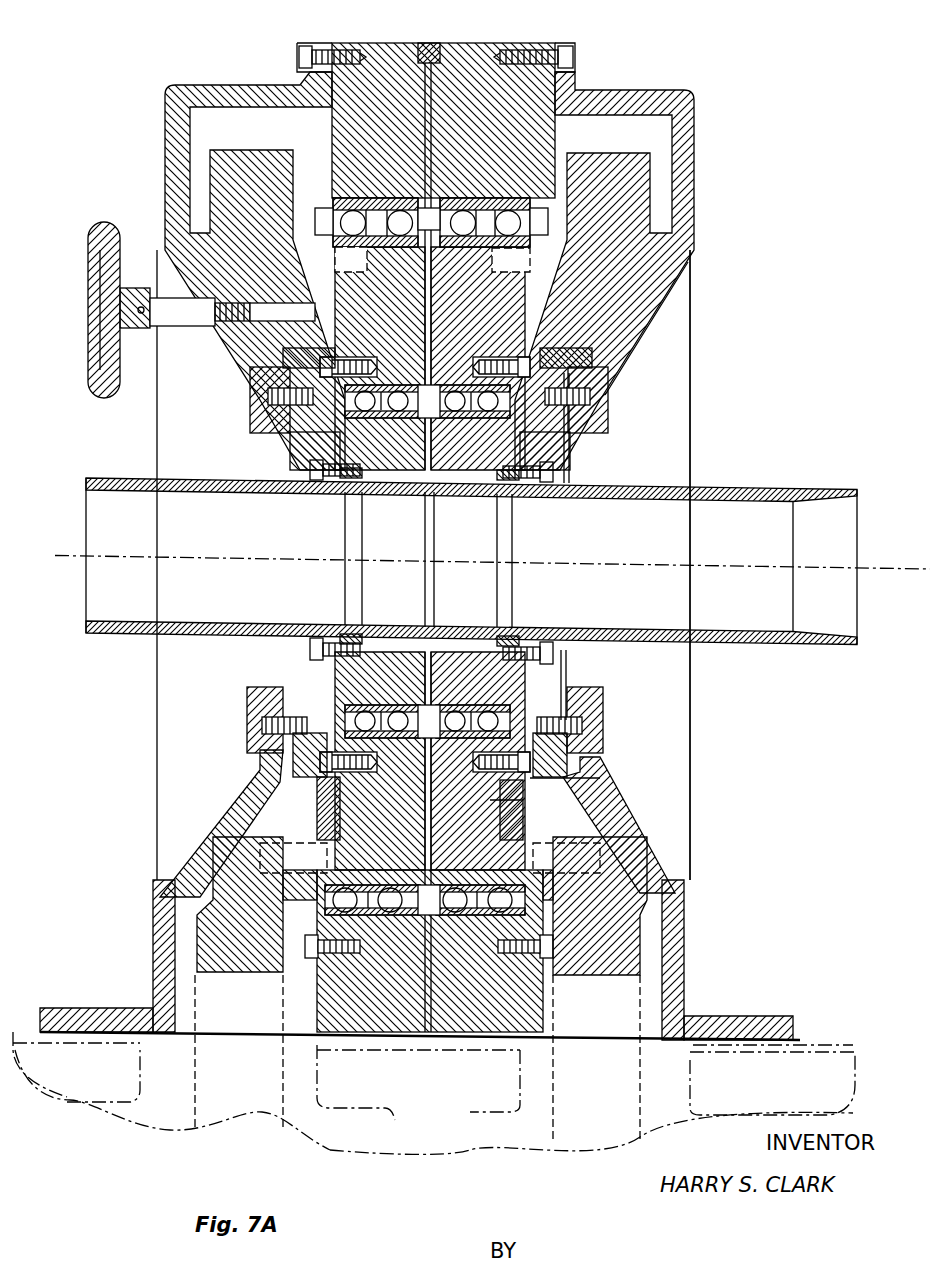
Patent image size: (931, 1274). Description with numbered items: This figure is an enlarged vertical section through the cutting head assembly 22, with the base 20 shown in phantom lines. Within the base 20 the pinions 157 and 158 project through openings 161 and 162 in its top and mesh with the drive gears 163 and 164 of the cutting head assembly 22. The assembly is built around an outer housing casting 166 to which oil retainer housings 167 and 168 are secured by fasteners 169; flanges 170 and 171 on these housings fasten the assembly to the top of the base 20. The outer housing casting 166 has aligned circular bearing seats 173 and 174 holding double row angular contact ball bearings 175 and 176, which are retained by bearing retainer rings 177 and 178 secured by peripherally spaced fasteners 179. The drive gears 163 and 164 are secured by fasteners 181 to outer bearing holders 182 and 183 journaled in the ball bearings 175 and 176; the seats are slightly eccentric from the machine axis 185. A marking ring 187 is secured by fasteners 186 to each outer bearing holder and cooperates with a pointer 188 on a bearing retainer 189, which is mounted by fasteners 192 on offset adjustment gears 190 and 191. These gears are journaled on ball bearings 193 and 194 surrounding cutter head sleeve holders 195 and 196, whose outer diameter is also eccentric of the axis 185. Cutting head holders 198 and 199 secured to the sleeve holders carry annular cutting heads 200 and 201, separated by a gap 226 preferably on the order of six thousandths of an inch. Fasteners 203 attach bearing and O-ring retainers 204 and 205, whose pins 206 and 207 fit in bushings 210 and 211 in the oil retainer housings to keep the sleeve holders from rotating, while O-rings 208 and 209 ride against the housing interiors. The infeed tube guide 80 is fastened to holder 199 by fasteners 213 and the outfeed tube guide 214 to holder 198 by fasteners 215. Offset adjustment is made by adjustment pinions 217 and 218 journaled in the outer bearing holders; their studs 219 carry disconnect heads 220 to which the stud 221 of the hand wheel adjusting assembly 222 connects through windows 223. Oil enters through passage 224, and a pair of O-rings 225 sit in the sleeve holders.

The base 20 is at (828, 1034).
The cutting head assembly 22 is at (712, 811).
The infeed tube guide 80 is at (745, 645).
The pinion 157 is at (270, 1120).
The pinion 158 is at (580, 1125).
The opening 161 is at (150, 1055).
The opening 162 is at (690, 1064).
The drive gear 163 is at (232, 960).
The drive gear 164 is at (590, 962).
The outer housing casting 166 is at (378, 1040).
The oil retainer housing 167 is at (158, 903).
The oil retainer housing 168 is at (686, 913).
The fasteners 169 is at (575, 55).
The flange 170 is at (97, 1008).
The flange 171 is at (725, 1016).
The bearing seat 173 is at (366, 205).
The bearing seat 174 is at (490, 205).
The double row angular contact ball bearing 175 is at (370, 884).
The double row angular contact ball bearing 176 is at (480, 884).
The bearing retainer ring 177 is at (318, 160).
The bearing retainer ring 178 is at (550, 160).
The fasteners 179 is at (335, 955).
The fasteners 181 is at (625, 820).
The outer bearing holder 182 is at (330, 800).
The outer bearing holder 183 is at (523, 805).
The center of the axis of the machine 185 is at (560, 565).
The fasteners 186 is at (523, 825).
The marking ring 187 is at (590, 785).
The pointer 188 is at (570, 770).
The bearing retainer 189 is at (566, 680).
The offset adjustment gear 190 is at (368, 412).
The offset adjustment gear 191 is at (470, 412).
The fasteners 192 is at (570, 376).
The double row angular contact ball bearing 193 is at (368, 708).
The double row angular contact ball bearing 194 is at (478, 708).
The cutter head sleeve holder 195 is at (384, 625).
The cutter head sleeve holder 196 is at (458, 627).
The cutting head holder 198 is at (345, 634).
The cutting head holder 199 is at (500, 636).
The annular cutting head 200 is at (368, 620).
The annular cutting head 201 is at (458, 620).
The fasteners 203 is at (358, 490).
The bearing and O-ring retainer 204 is at (292, 440).
The bearing and O-ring retainer 205 is at (570, 440).
The pin 206 is at (266, 396).
The pin 207 is at (592, 403).
The O-ring 208 is at (285, 358).
The O-ring 209 is at (590, 360).
The bushing 210 is at (270, 687).
The bushing 211 is at (582, 690).
The fasteners 213 is at (545, 642).
The outfeed tube guide 214 is at (188, 622).
The fasteners 215 is at (312, 638).
The adjustment pinion 217 is at (378, 263).
The adjustment pinion 218 is at (490, 263).
The stud 219 is at (322, 362).
The disconnect head 220 is at (528, 362).
The stud 221 is at (270, 298).
The hand wheel adjusting assembly 222 is at (88, 358).
The window 223 is at (628, 300).
The passage 224 is at (440, 55).
The O-rings 225 is at (472, 484).
The gap between the cutting heads 226 is at (428, 496).